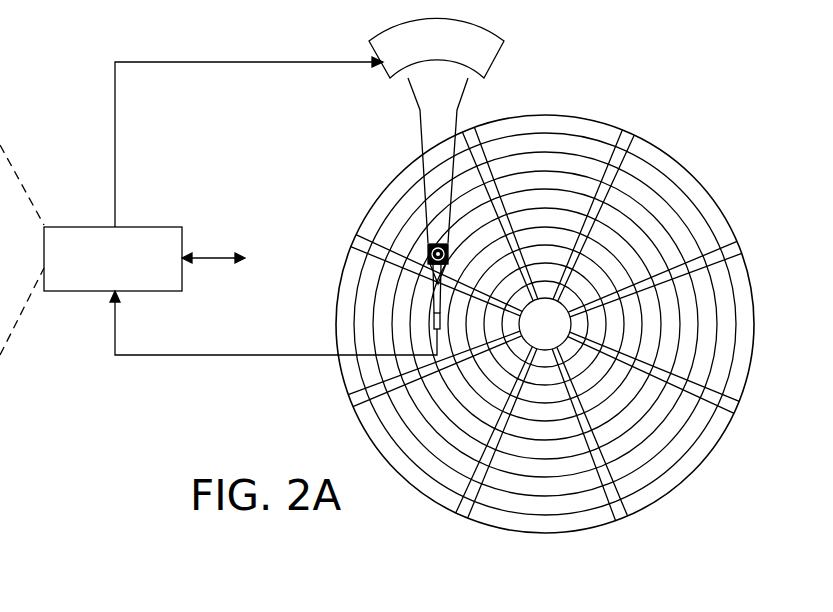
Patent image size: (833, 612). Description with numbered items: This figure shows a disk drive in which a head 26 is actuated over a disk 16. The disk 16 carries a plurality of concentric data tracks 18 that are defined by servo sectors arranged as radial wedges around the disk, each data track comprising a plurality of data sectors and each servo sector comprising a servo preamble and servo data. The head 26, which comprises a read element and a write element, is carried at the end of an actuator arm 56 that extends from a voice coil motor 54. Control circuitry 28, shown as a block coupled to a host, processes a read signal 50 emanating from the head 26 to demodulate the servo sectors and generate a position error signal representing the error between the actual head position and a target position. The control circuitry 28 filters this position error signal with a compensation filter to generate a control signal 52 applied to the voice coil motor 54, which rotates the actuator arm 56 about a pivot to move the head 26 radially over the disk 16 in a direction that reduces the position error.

The disk 16 is at (694, 159).
The data tracks 18 is at (545, 143).
The head 26 is at (426, 332).
The control circuitry 28 is at (153, 227).
The read signal 50 is at (238, 358).
The control signal 52 is at (115, 130).
The voice coil motor 54 is at (385, 75).
The actuator arm 56 is at (422, 128).